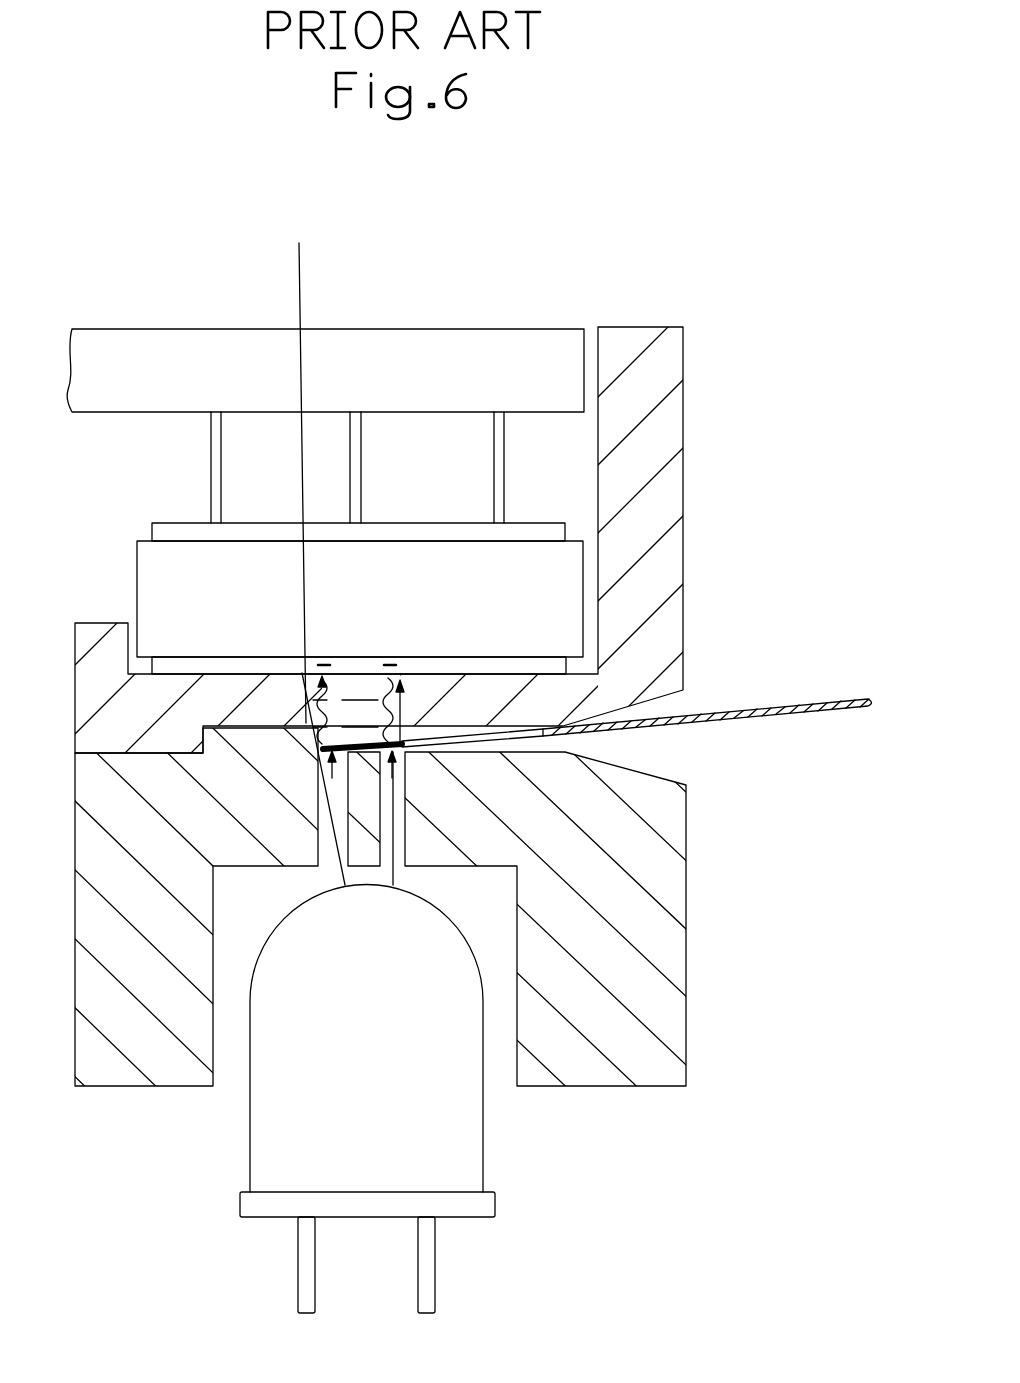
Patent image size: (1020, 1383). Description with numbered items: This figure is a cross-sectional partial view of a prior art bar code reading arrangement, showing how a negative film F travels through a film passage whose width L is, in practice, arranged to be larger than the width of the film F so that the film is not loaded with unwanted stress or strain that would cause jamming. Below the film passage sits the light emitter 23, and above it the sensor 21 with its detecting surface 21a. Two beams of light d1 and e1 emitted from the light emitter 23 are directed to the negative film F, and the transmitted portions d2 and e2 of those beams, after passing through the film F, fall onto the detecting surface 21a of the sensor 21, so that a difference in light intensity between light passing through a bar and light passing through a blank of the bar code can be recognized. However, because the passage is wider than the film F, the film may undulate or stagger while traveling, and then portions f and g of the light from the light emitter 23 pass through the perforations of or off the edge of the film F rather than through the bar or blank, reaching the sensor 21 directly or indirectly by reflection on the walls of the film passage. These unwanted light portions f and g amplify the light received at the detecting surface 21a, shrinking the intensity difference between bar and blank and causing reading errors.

The sensor 21 is at (145, 582).
The detecting surface 21a is at (390, 664).
The light emitter 23 is at (253, 1141).
The negative film F is at (781, 698).
The width of the film passage L is at (302, 258).
The beam of light d1 is at (332, 864).
The transmitted portion of light beam d2 is at (316, 712).
The beam of light e1 is at (403, 847).
The transmitted portion of light beam e2 is at (404, 710).
The unwanted light portion f is at (323, 782).
The unwanted light portion g is at (408, 808).